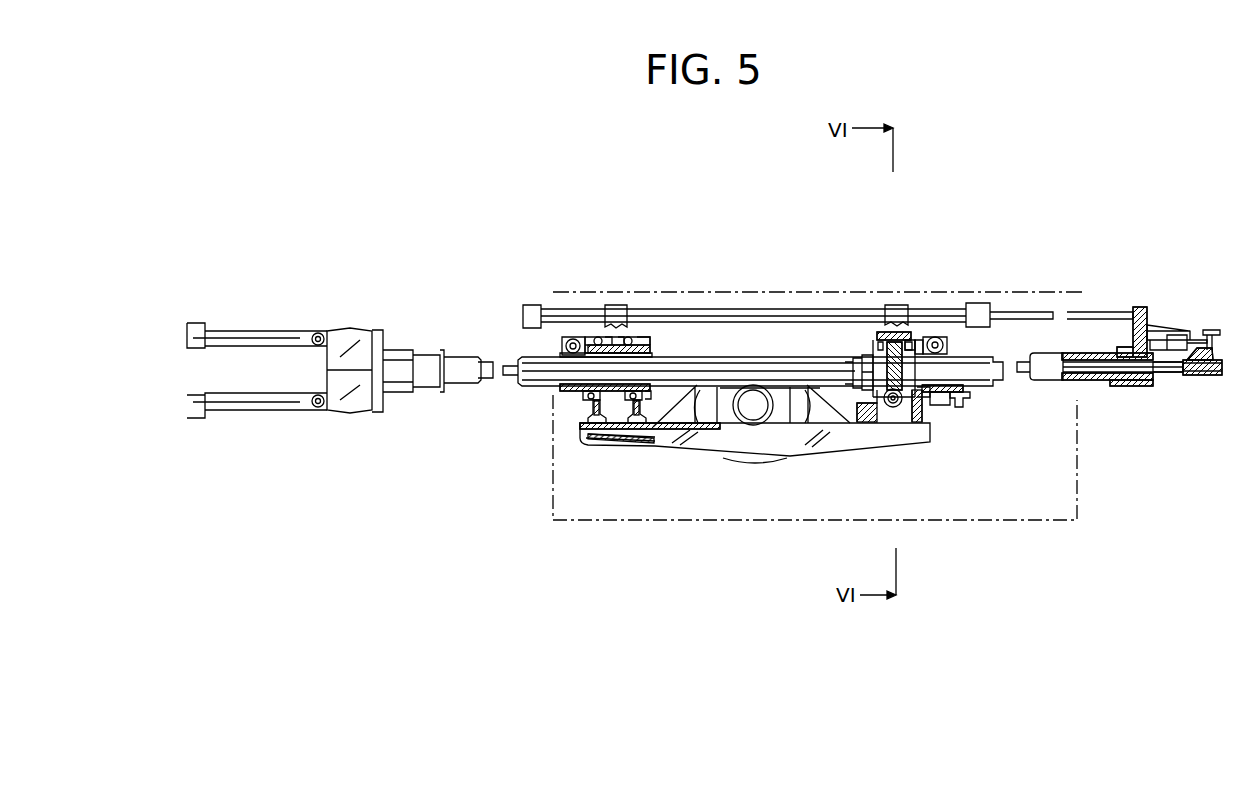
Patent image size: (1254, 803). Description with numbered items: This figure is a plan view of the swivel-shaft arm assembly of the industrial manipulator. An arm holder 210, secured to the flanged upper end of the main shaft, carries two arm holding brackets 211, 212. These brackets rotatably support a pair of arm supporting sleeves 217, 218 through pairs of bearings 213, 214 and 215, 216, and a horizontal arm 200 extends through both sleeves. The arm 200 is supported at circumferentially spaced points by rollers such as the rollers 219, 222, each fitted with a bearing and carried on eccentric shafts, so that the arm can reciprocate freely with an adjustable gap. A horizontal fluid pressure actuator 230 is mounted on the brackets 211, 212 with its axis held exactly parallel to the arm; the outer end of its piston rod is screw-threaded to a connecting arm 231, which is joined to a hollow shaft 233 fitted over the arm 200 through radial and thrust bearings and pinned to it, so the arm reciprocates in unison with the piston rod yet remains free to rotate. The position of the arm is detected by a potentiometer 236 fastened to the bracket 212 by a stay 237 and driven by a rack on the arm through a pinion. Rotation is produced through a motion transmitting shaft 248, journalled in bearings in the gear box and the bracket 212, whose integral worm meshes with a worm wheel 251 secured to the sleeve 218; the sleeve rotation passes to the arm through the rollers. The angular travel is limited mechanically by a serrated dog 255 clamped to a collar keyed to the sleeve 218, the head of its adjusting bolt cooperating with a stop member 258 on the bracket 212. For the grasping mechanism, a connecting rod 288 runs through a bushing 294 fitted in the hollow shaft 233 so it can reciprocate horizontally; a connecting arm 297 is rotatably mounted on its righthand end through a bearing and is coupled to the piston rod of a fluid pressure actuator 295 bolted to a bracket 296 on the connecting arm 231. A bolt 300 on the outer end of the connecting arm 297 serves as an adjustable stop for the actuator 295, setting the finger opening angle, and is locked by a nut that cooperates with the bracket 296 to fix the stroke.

The horizontal arm 200 is at (968, 361).
The arm holder 210 is at (748, 452).
The arm holding bracket 211 is at (585, 405).
The arm holding bracket 212 is at (928, 425).
The bearing 213 is at (570, 338).
The bearing 214 is at (640, 340).
The bearing 215 is at (880, 335).
The bearing 216 is at (913, 345).
The arm supporting sleeve 217 is at (616, 330).
The arm supporting sleeve 218 is at (925, 345).
The roller 219 is at (562, 338).
The roller 222 is at (940, 345).
The horizontal fluid pressure actuator 230 is at (792, 318).
The connecting arm 231 is at (1122, 347).
The hollow shaft 233 is at (1082, 384).
The potentiometer 236 is at (960, 408).
The stay 237 is at (934, 418).
The motion transmitting shaft 248 is at (896, 405).
The worm wheel 251 is at (900, 406).
The dog 255 is at (866, 380).
The stop member 258 is at (879, 332).
The connecting rod 288 is at (1158, 376).
The bushing 294 is at (1080, 384).
The fluid pressure actuator 295 is at (1128, 340).
The bracket 296 is at (1160, 326).
The connecting arm 297 is at (1188, 376).
The bolt 300 is at (1222, 320).